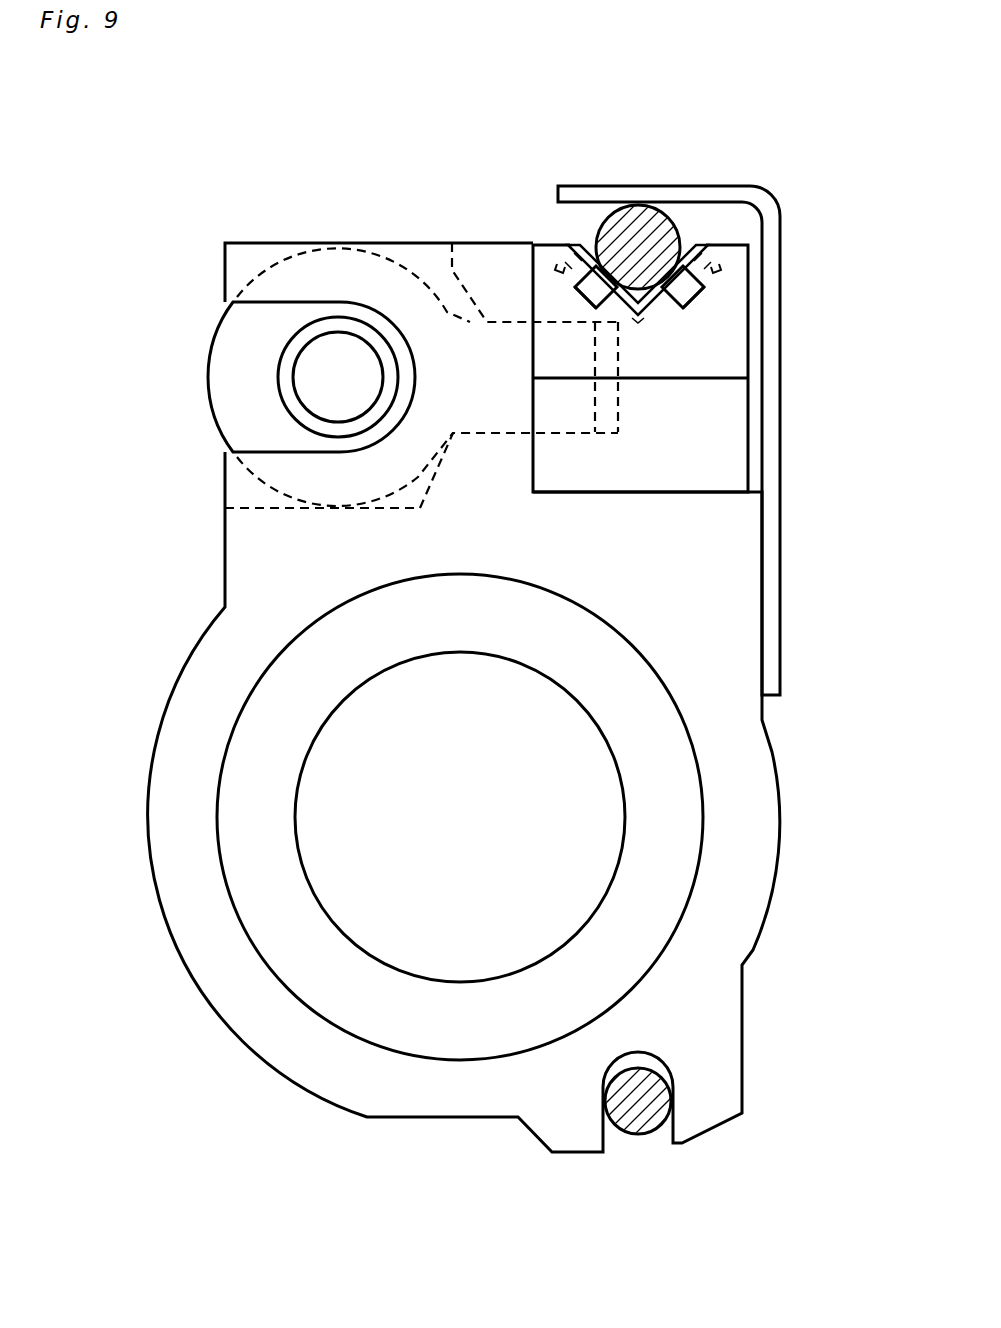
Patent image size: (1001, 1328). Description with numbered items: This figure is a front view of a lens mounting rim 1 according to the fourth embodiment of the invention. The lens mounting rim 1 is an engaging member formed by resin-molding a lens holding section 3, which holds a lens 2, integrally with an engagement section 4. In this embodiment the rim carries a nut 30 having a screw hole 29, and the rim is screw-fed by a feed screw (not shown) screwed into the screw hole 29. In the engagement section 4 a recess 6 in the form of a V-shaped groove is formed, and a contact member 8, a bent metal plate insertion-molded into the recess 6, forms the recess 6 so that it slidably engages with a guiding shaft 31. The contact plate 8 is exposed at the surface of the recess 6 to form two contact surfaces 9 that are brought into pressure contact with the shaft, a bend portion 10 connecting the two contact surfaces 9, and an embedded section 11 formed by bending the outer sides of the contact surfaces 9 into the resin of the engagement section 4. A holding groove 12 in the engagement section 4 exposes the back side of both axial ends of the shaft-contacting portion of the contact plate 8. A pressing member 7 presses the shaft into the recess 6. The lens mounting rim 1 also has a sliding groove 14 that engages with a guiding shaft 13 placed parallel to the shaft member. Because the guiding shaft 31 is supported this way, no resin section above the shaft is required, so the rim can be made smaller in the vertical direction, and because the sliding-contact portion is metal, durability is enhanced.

The lens mounting rim 1 is at (364, 200).
The lens 2 is at (570, 820).
The lens holding section 3 is at (236, 593).
The engagement section 4 is at (750, 365).
The recess 6 is at (653, 207).
The pressing member 7 is at (752, 186).
The contact plate 8 is at (583, 246).
The contact surfaces 9 is at (593, 262).
The bend portion 10 is at (648, 312).
The embedded section 11 is at (556, 260).
The holding groove 12 is at (578, 283).
The guiding shaft 13 is at (635, 1135).
The sliding groove 14 is at (665, 1135).
The screw hole 29 is at (300, 410).
The nut 30 is at (210, 358).
The guiding shaft 31 is at (638, 300).